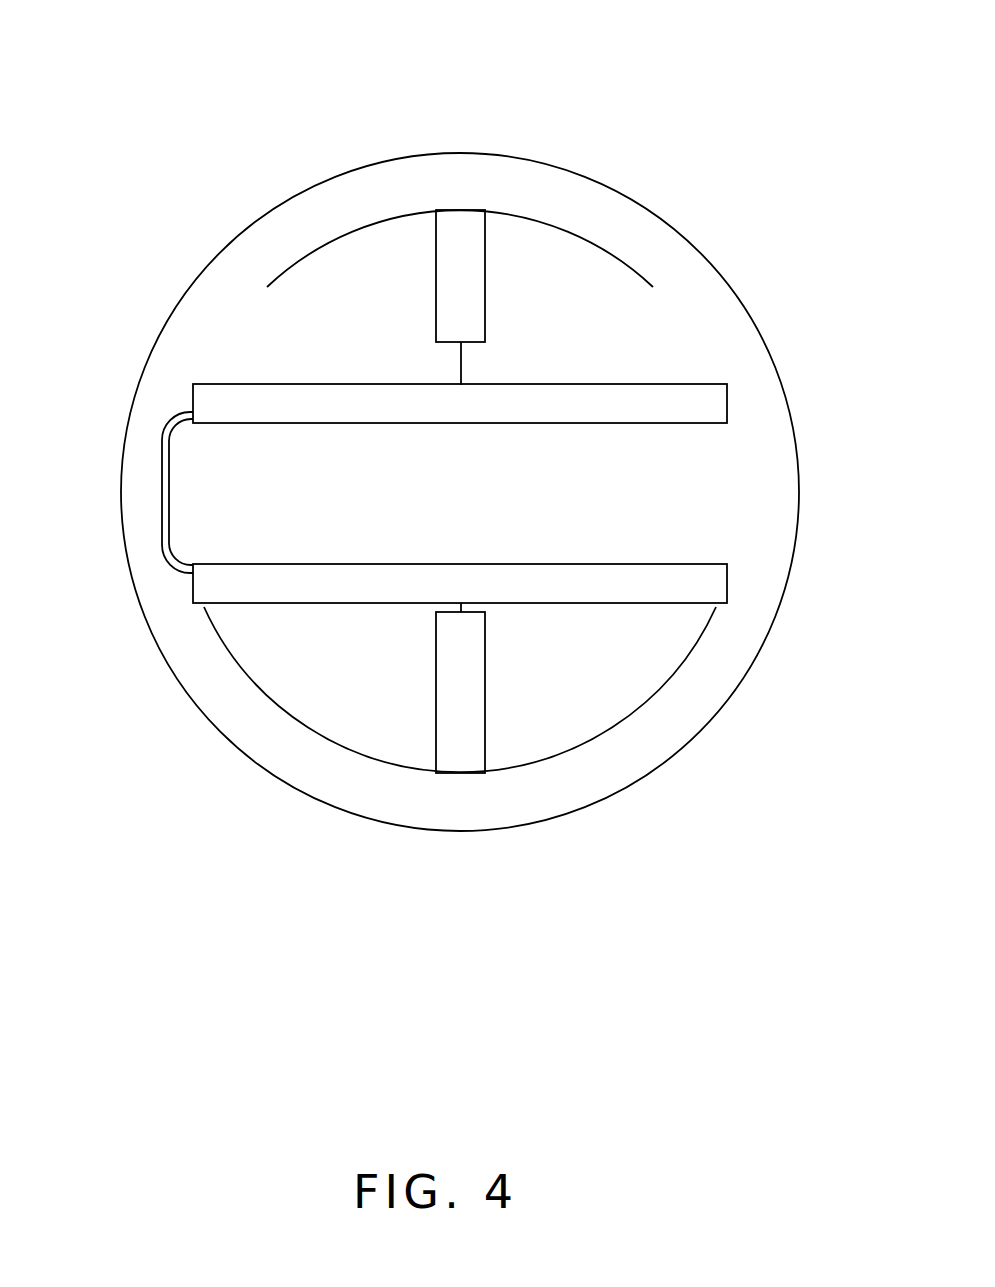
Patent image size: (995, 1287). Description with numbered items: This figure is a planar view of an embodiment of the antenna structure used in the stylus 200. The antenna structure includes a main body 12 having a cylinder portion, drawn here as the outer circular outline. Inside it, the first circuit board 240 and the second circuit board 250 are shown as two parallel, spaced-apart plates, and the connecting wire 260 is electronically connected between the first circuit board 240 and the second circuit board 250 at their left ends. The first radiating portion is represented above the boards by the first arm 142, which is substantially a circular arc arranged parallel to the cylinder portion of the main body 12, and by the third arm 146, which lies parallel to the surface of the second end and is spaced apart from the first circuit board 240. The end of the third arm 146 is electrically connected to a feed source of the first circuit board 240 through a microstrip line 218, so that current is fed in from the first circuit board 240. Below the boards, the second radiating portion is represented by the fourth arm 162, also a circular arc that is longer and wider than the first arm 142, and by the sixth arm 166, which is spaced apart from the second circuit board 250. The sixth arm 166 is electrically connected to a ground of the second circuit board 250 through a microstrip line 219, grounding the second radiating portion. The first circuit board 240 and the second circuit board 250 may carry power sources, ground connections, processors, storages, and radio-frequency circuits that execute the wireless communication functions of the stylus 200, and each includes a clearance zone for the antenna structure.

The stylus 200 is at (390, 53).
The main body 12 is at (233, 238).
The first arm 142 is at (560, 227).
The third arm 146 is at (463, 230).
The fourth arm 162 is at (512, 768).
The sixth arm 166 is at (470, 688).
The microstrip line 218 is at (461, 363).
The microstrip line 219 is at (480, 612).
The first circuit board 240 is at (694, 402).
The second circuit board 250 is at (223, 590).
The connecting wire 260 is at (167, 473).